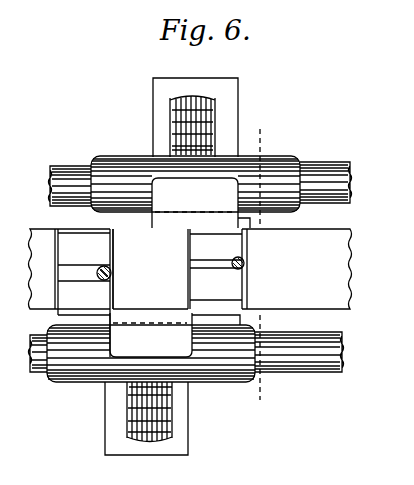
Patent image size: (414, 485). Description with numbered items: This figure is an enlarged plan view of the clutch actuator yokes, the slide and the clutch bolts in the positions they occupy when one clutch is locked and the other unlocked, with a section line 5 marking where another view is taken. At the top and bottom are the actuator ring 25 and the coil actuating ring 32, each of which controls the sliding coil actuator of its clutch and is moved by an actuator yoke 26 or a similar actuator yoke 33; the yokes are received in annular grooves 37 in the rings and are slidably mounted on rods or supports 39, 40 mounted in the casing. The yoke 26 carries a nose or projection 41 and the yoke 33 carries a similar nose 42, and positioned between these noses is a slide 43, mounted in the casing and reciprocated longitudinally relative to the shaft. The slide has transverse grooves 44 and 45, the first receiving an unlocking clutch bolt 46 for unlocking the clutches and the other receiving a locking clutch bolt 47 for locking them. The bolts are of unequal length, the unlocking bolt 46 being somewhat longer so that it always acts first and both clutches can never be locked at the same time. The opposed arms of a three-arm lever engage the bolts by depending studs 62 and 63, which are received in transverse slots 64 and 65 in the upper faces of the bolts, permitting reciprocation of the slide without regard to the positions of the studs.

The section line 5 is at (270, 142).
The actuator ring 25 is at (231, 89).
The actuator yoke 26 is at (186, 118).
The coil actuating ring 32 is at (113, 414).
The actuator yoke 33 is at (150, 422).
The annular grooves 37 is at (189, 88).
The rod or support 39 is at (318, 353).
The rod or support 40 is at (333, 177).
The nose or projection 41 is at (182, 228).
The nose 42 is at (150, 317).
The slide 43 is at (330, 288).
The transverse groove 44 is at (100, 234).
The transverse groove 45 is at (200, 310).
The unlocking clutch bolt 46 is at (98, 302).
The locking clutch bolt 47 is at (198, 282).
The depending stud 62 is at (110, 273).
The depending stud 63 is at (245, 263).
The transverse slot 64 is at (70, 274).
The transverse slot 65 is at (204, 264).